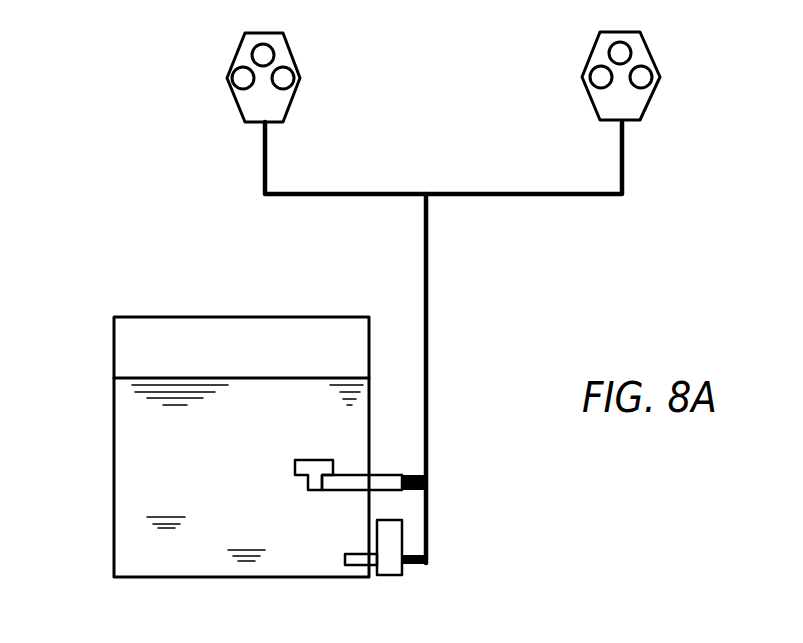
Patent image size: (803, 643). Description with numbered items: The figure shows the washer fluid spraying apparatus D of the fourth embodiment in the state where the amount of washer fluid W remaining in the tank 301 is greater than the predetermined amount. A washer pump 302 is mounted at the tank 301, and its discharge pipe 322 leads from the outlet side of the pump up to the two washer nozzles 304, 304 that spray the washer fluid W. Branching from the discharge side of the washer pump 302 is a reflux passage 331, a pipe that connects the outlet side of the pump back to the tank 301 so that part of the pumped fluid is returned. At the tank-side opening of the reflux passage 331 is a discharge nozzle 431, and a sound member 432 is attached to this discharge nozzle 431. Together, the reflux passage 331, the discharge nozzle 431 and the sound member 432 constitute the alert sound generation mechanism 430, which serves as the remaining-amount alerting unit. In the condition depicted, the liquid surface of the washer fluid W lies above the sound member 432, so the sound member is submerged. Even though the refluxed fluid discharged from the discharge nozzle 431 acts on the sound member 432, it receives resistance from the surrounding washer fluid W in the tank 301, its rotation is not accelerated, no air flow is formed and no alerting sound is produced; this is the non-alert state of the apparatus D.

The washer fluid spraying apparatus D is at (476, 29).
The washer nozzle 304 is at (302, 66).
The tank 301 is at (113, 457).
The washer fluid W is at (175, 378).
The sound member 432 is at (311, 460).
The discharge nozzle 431 is at (385, 473).
The reflux passage 331 is at (412, 473).
The discharge pipe 322 is at (430, 515).
The washer pump 302 is at (402, 531).
The alert sound generation mechanism 430 is at (348, 440).